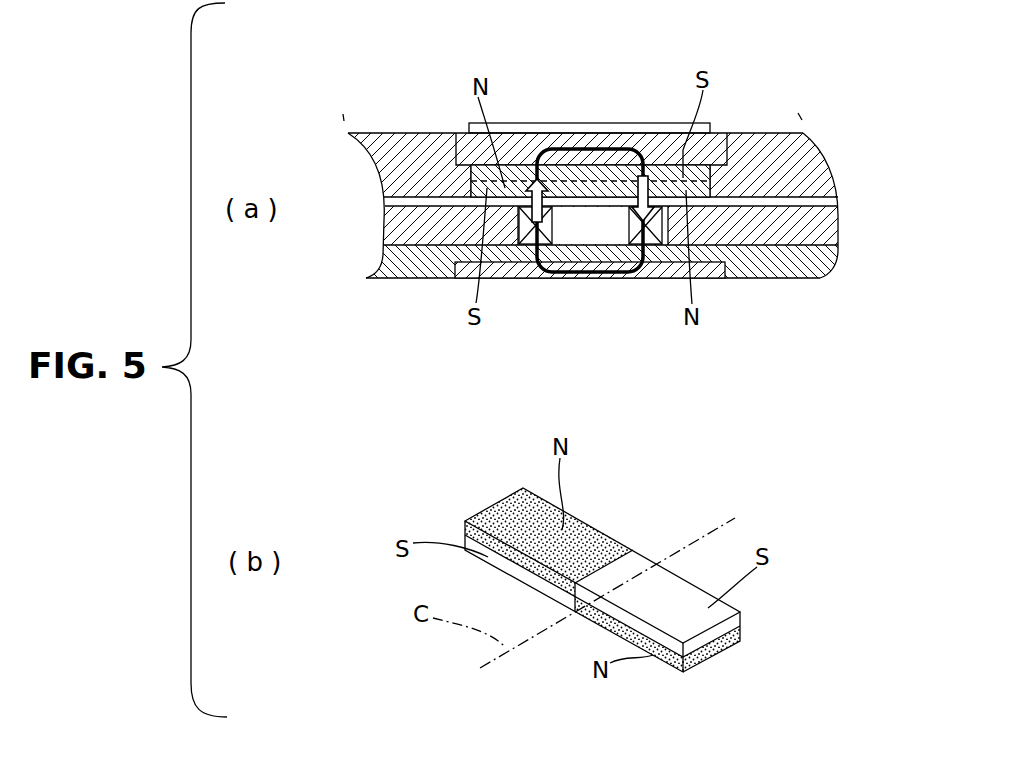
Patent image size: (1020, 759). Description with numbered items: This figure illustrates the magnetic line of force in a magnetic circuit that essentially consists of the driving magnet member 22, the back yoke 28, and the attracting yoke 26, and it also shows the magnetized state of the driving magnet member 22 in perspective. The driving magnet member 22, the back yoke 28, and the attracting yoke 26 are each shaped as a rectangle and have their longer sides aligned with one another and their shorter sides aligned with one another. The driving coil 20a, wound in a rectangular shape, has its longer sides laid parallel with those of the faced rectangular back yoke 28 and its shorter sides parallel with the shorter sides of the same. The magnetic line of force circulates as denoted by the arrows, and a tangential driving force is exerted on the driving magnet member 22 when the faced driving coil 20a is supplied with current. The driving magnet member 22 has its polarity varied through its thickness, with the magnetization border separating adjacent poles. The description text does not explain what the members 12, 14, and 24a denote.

The lower housing / base member 12 is at (777, 265).
The upper housing / cover member 14 is at (752, 150).
The driving coil 20a is at (527, 240).
The driving magnet member 22 is at (465, 150).
The back plate 24a is at (535, 129).
The attracting yoke 26 is at (578, 278).
The back yoke 28 is at (658, 150).